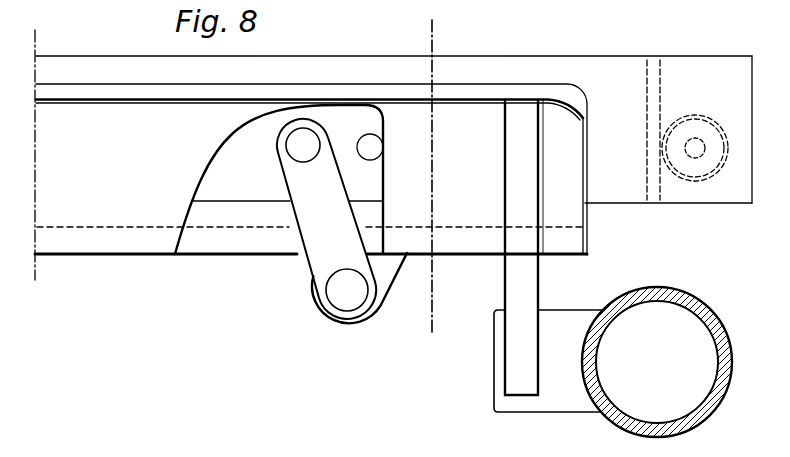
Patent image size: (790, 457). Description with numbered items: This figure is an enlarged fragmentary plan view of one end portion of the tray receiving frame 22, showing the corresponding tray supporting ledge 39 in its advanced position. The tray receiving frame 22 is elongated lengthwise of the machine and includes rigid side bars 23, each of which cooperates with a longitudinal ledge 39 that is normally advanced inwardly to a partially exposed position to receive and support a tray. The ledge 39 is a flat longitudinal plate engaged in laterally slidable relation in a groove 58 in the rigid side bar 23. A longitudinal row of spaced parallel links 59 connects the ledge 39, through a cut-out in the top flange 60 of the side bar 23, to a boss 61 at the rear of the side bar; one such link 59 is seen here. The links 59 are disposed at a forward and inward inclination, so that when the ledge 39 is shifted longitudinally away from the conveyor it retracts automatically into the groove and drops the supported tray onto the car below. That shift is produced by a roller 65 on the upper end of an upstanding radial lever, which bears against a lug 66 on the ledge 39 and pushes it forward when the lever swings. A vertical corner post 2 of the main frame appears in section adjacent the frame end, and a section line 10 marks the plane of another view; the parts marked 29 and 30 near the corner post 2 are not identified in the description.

The vertical corner post 2 is at (696, 297).
The section line 10- 10 is at (414, 31).
The tray receiving frame 22 is at (591, 229).
The rigid side bar 23 is at (118, 92).
The support post 29 is at (513, 340).
The base bracket 30 is at (498, 393).
The longitudinal ledge 39 is at (573, 72).
The groove 58 is at (225, 213).
The parallel link 59 is at (313, 232).
The top flange 60 is at (102, 199).
The boss 61 is at (310, 287).
The roller 65 is at (698, 114).
The lug 66 is at (651, 92).